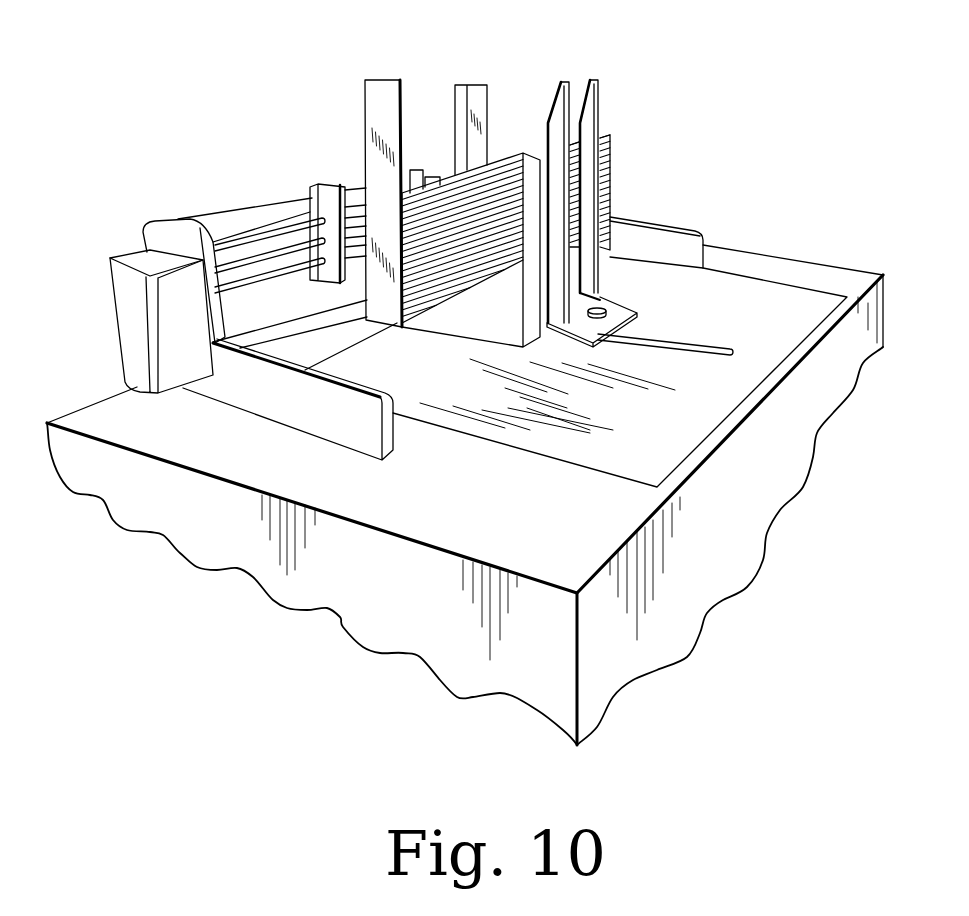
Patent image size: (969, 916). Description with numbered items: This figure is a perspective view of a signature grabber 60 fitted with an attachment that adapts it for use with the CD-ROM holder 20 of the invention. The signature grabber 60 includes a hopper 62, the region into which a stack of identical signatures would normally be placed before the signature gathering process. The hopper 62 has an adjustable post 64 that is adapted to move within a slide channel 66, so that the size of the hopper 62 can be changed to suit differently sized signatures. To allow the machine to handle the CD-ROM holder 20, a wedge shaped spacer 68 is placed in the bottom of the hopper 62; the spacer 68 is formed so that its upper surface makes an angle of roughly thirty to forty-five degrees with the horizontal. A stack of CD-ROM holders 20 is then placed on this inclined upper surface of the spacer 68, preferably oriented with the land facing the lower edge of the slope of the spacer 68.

The CD-ROM holder 20 is at (612, 157).
The signature grabber 60 is at (843, 263).
The hopper 62 is at (517, 94).
The adjustable post 64 is at (594, 108).
The slide channel 66 is at (698, 345).
The wedge shaped spacer 68 is at (604, 270).